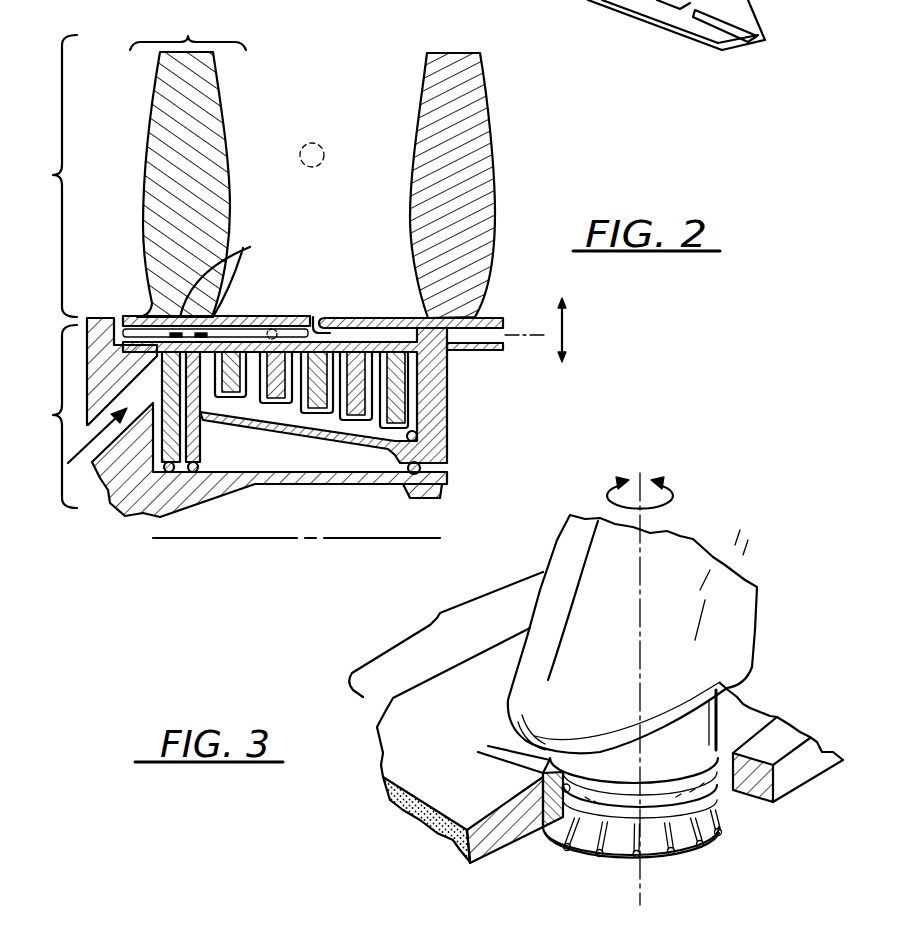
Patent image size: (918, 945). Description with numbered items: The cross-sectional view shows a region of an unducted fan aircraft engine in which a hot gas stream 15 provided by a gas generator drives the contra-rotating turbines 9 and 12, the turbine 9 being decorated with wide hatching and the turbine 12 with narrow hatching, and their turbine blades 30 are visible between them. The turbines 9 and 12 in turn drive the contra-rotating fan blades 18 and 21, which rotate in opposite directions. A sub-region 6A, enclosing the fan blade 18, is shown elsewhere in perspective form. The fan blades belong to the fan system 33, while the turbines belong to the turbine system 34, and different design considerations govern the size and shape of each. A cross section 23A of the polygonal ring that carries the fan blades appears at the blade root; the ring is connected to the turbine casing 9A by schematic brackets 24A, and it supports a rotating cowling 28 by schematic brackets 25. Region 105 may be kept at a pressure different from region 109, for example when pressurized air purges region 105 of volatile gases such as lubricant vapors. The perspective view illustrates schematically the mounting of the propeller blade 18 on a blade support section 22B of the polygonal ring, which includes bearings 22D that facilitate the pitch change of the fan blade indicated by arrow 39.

In FIG. 2, the sub-region 6A is at (188, 31).
In FIG. 2, the fan blade 18 is at (217, 121).
In FIG. 3, the fan blade 18 is at (695, 621).
In FIG. 2, the fan blade 21 is at (425, 158).
In FIG. 2, the region 109 is at (322, 146).
In FIG. 2, the fan system 33 is at (50, 176).
In FIG. 2, the turbine system 34 is at (50, 416).
In FIG. 2, the cross section of the ring 23A is at (231, 271).
In FIG. 2, the schematic brackets 24A is at (142, 316).
In FIG. 2, the turbine casing 9A is at (122, 317).
In FIG. 2, the schematic brackets 25 is at (252, 317).
In FIG. 2, the turbine 9 is at (255, 345).
In FIG. 2, the rotating cowling 28 is at (313, 317).
In FIG. 2, the region 105 is at (336, 317).
In FIG. 2, the turbine 12 is at (272, 422).
In FIG. 2, the turbine blades 30 is at (170, 440).
In FIG. 2, the hot gas stream 15 is at (74, 464).
In FIG. 3, the pitch change arrow 39 is at (608, 494).
In FIG. 3, the blade support section 22B is at (449, 717).
In FIG. 3, the bearings 22D is at (722, 750).